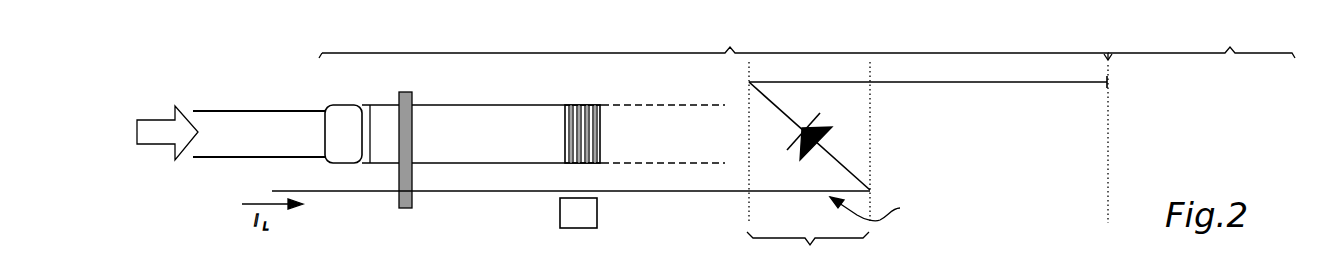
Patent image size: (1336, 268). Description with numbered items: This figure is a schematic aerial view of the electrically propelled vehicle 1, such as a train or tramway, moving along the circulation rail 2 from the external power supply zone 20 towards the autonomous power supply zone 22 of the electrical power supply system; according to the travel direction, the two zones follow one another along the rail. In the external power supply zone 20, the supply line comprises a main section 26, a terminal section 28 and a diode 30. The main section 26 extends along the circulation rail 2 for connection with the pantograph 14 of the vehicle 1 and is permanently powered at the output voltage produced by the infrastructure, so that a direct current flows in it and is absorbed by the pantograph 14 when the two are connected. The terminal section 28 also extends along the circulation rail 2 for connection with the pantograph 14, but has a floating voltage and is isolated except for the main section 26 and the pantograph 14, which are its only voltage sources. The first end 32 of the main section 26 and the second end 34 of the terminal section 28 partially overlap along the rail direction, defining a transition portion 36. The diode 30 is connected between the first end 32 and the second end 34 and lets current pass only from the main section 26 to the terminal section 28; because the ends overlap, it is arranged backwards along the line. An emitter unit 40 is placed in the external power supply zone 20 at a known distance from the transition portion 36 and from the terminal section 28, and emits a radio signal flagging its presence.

The electrically propelled vehicle 1 is at (437, 125).
The circulation rail 2 is at (257, 111).
The pantograph 14 is at (412, 184).
The external power supply zone 20 is at (715, 41).
The autonomous power supply zone 22 is at (1201, 124).
The main section 26 is at (355, 191).
The terminal section 28 is at (1013, 82).
The diode 30 is at (823, 125).
The first end 32 is at (877, 209).
The second end 34 is at (793, 82).
The transition portion 36 is at (808, 165).
The emitter unit 40 is at (578, 213).